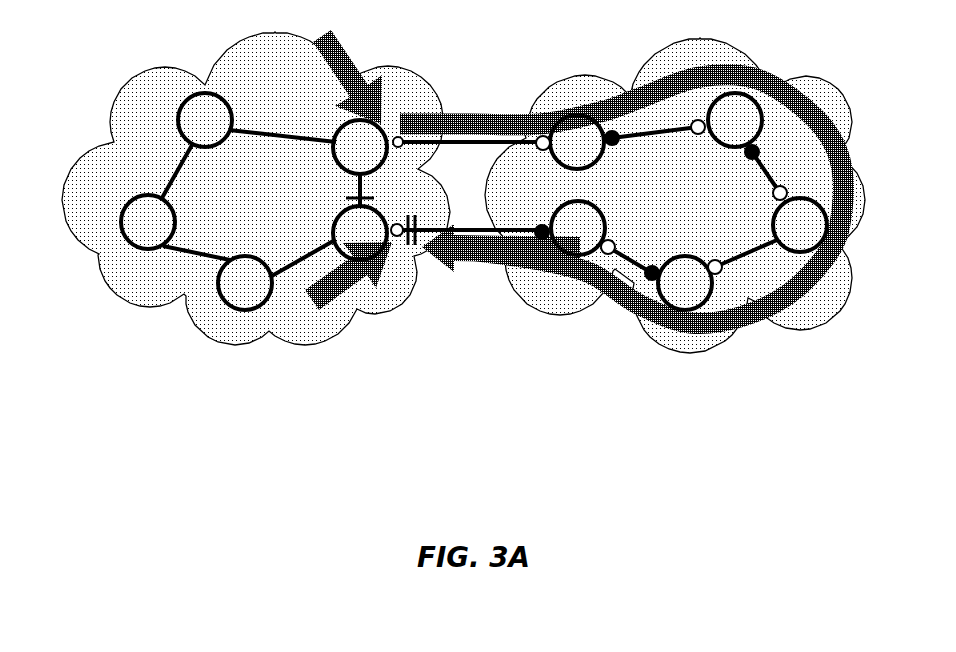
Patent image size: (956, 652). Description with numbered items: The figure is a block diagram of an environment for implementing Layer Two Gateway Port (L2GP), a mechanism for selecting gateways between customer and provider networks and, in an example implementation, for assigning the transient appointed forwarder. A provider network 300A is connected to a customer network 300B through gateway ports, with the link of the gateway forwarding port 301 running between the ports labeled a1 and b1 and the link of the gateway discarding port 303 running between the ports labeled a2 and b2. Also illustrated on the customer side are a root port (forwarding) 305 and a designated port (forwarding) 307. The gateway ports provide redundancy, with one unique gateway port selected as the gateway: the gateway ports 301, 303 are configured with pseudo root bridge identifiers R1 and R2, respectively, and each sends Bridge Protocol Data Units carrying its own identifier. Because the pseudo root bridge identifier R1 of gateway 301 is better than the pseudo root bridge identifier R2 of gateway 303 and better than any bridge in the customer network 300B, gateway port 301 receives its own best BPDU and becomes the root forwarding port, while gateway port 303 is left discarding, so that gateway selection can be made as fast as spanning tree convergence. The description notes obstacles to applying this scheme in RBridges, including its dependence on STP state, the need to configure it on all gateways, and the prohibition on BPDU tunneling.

The provider network 300A is at (256, 188).
The customer network 300B is at (675, 195).
The gateway forwarding port 301 is at (394, 136).
The gateway discarding port 303 is at (398, 238).
The root port (forwarding) 305 is at (776, 187).
The designated port (forwarding) 307 is at (708, 272).
The pseudo root bridge identifier R1 is at (342, 69).
The pseudo root bridge identifier R2 is at (324, 293).
The port a1 is at (403, 126).
The port a2 is at (402, 218).
The port b1 is at (539, 126).
The port b2 is at (538, 220).